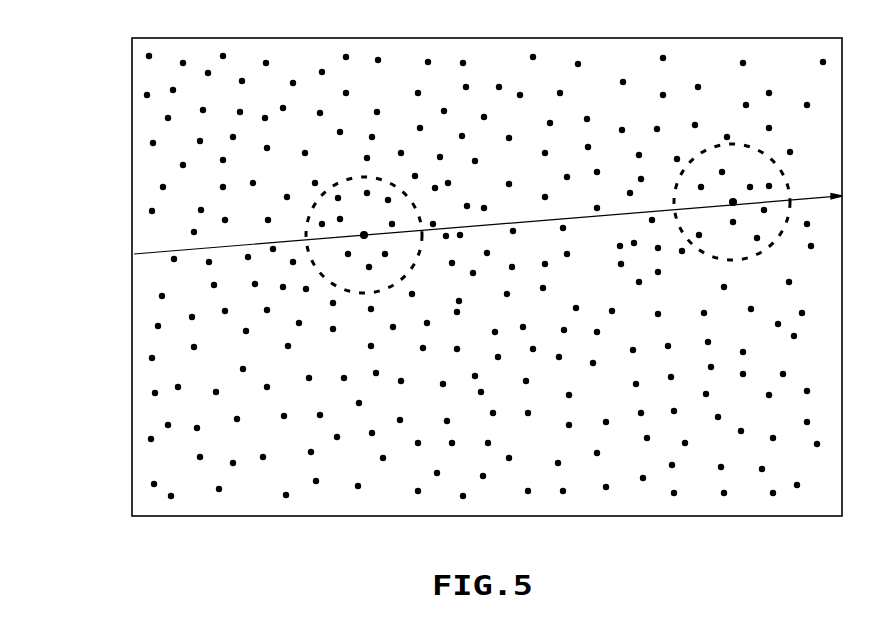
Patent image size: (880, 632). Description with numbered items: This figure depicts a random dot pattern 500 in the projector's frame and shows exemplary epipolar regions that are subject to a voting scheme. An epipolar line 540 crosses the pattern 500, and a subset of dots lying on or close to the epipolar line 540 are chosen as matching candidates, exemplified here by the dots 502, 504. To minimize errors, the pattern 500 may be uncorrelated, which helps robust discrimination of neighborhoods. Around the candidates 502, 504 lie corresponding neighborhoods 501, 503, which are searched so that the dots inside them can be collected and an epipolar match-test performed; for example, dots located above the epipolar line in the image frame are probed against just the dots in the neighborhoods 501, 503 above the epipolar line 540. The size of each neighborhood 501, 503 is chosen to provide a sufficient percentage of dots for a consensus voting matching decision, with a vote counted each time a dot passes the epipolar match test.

The pattern 500 is at (142, 409).
The neighborhood 501 is at (312, 174).
The dot 502 is at (368, 221).
The neighborhood 503 is at (658, 169).
The dot 504 is at (730, 200).
The epipolar line 540 is at (137, 253).